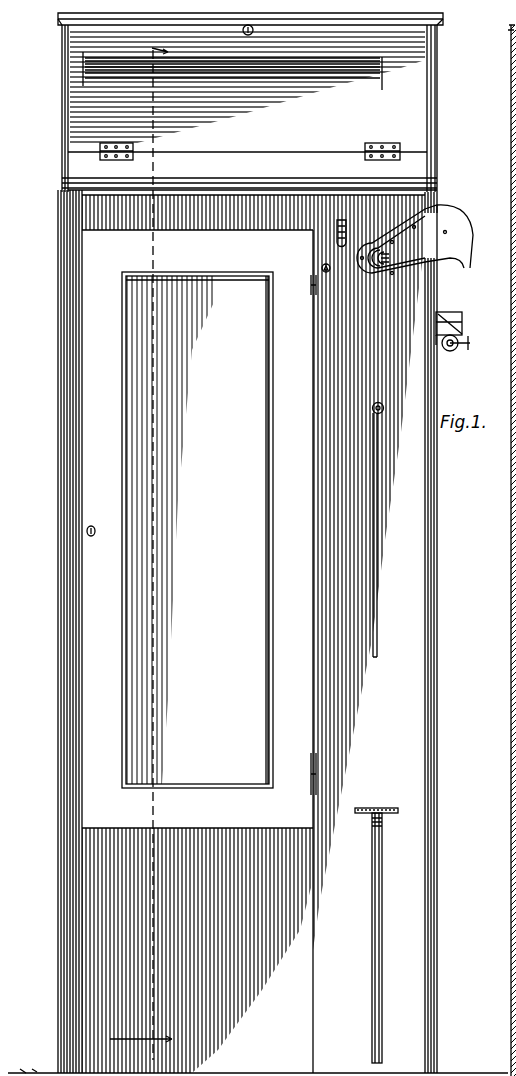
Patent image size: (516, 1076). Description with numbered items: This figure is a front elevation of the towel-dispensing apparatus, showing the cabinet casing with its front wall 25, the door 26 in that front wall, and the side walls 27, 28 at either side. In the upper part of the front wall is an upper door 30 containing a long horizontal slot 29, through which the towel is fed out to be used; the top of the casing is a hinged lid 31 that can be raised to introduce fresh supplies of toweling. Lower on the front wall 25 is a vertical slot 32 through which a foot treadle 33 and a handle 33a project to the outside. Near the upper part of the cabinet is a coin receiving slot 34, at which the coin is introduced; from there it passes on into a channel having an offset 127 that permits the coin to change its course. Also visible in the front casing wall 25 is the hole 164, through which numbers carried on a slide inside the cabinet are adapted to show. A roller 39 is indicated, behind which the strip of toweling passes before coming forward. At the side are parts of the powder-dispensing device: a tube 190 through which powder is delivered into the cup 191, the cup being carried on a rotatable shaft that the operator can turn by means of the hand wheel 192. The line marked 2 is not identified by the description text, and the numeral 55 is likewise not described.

The section line 2- 2 is at (141, 548).
The front wall 25 is at (253, 634).
The door 26 is at (197, 530).
The side wall 27 is at (436, 507).
The side wall 28 is at (58, 506).
The long horizontal slot 29 is at (325, 72).
The upper door 30 is at (243, 93).
The hinged lid 31 is at (438, 28).
The vertical slot 32 is at (372, 906).
The foot treadle 33 is at (372, 808).
The handle 33a is at (375, 403).
The coin receiving slot 34 is at (459, 214).
The roller 39 is at (511, 67).
The slot plate 55 is at (279, 71).
The offset 127 is at (381, 276).
The hole 164 is at (347, 246).
The tube 190 is at (466, 322).
The cup 191 is at (452, 352).
The hand wheel 192 is at (484, 344).